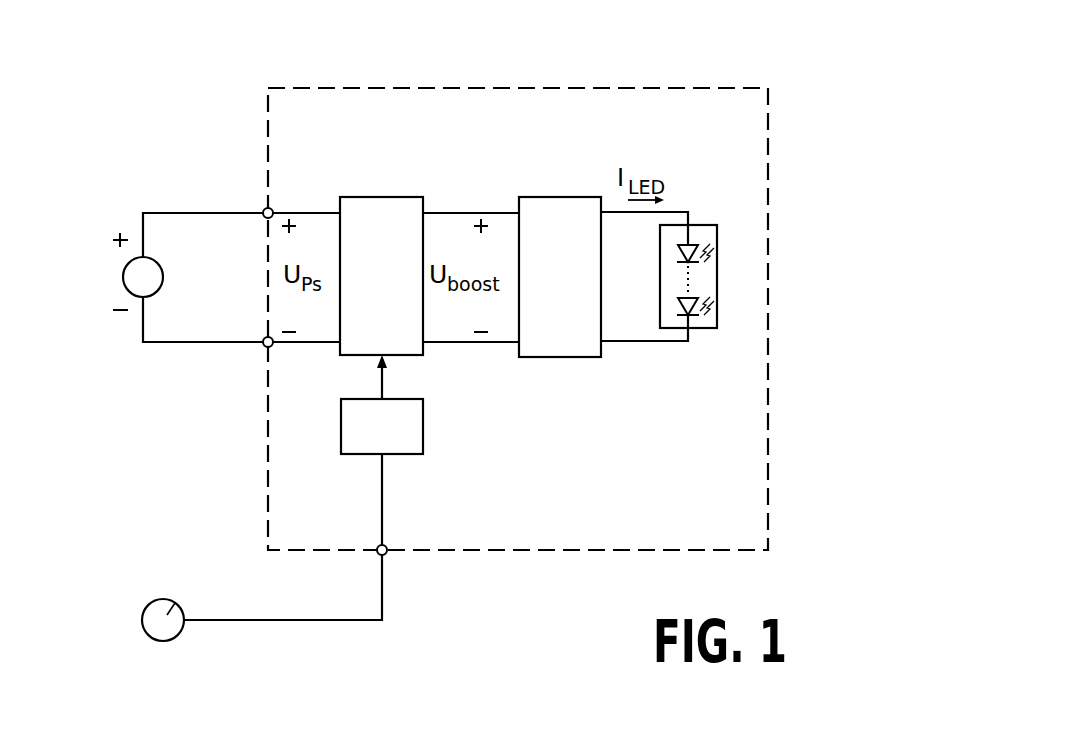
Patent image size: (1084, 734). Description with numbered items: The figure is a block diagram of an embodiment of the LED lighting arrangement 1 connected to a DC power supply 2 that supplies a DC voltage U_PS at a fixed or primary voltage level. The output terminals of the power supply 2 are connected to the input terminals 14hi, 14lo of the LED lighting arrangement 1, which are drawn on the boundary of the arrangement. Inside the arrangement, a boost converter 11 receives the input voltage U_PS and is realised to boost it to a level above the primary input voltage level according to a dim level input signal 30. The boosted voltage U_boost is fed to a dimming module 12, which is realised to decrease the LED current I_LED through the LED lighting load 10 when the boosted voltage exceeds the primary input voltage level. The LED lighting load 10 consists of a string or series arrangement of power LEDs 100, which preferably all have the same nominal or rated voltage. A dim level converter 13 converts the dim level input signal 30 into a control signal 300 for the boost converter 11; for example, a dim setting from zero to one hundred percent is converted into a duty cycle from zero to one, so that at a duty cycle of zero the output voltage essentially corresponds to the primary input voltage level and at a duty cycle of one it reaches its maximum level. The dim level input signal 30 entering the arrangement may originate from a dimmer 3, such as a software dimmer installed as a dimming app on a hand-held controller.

The LED lighting arrangement 1 is at (693, 88).
The DC power supply 2 is at (123, 277).
The dimmer 3 is at (142, 620).
The LED lighting load 10 is at (697, 225).
The power LEDs 100 is at (693, 294).
The boost converter 11 is at (383, 197).
The dimming module 12 is at (561, 197).
The dim level converter 13 is at (423, 428).
The input terminal 14hi is at (269, 207).
The input terminal 14lo is at (270, 347).
The dim level input signal 30 is at (383, 508).
The control signal 300 is at (383, 382).